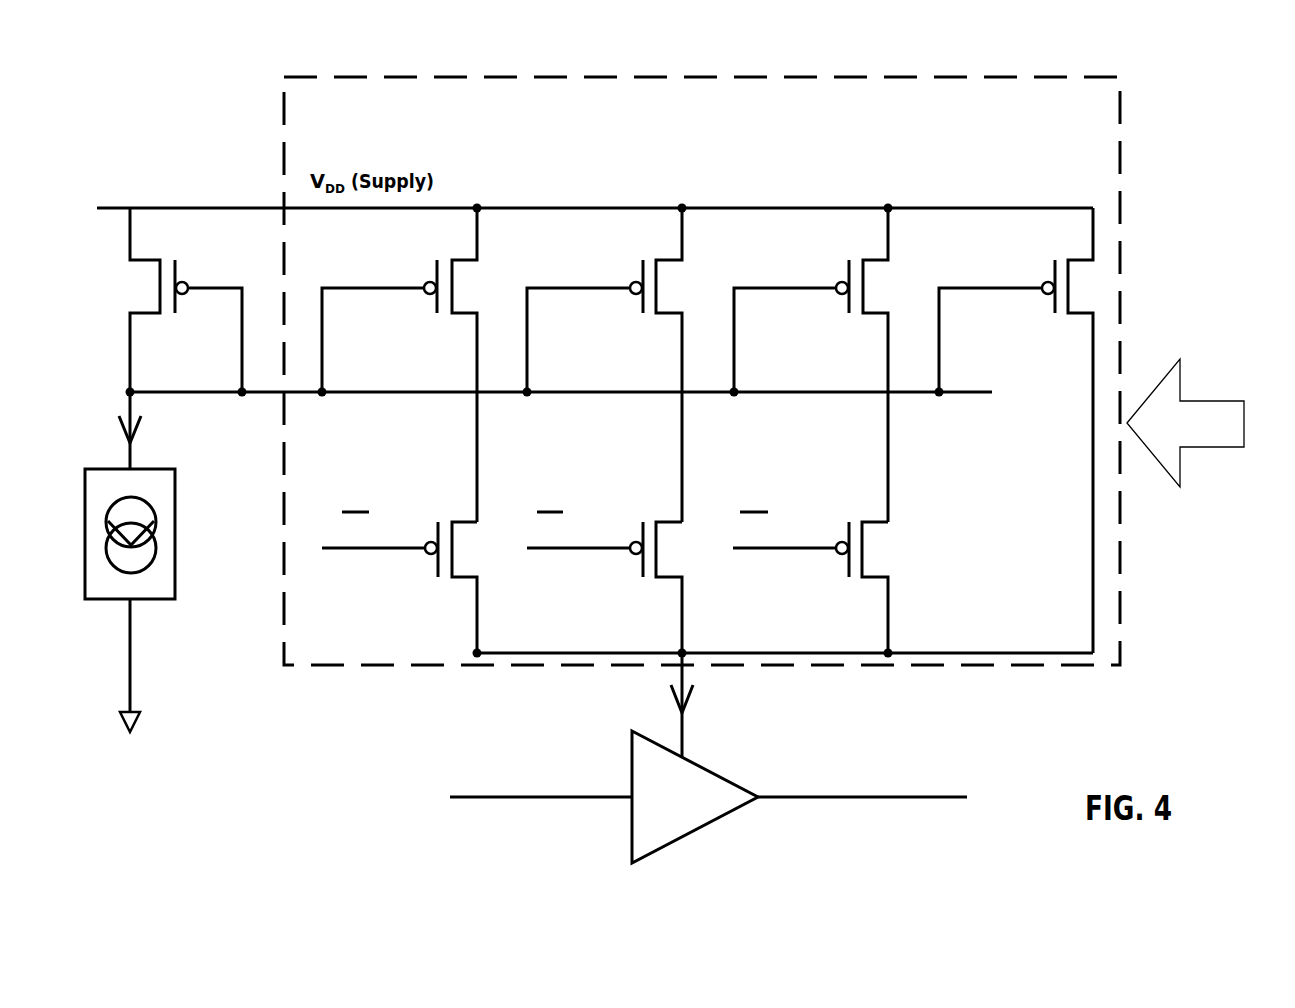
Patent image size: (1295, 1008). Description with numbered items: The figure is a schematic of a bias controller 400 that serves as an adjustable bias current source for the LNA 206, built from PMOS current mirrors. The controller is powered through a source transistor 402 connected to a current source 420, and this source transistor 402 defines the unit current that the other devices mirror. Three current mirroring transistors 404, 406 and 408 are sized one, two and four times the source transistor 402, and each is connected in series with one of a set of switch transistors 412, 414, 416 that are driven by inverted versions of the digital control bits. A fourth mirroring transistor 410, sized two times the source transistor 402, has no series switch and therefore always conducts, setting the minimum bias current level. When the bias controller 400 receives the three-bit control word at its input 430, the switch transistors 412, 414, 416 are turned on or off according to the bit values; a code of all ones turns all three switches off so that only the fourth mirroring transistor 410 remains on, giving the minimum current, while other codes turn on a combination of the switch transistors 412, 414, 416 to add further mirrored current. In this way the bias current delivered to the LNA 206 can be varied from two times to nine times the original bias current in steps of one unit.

The bias controller 400 is at (1042, 134).
The source transistor 402 is at (101, 299).
The current mirroring transistor 404 is at (493, 295).
The current mirroring transistor 406 is at (700, 290).
The current mirroring transistor 408 is at (903, 290).
The fourth mirroring transistor 410 is at (1108, 270).
The switch transistor 412 is at (891, 552).
The switch transistor 414 is at (689, 552).
The switch transistor 416 is at (487, 552).
The current source 420 is at (147, 600).
The three-bit input c 2:0 430 is at (1215, 437).
The LNA 206 is at (707, 828).